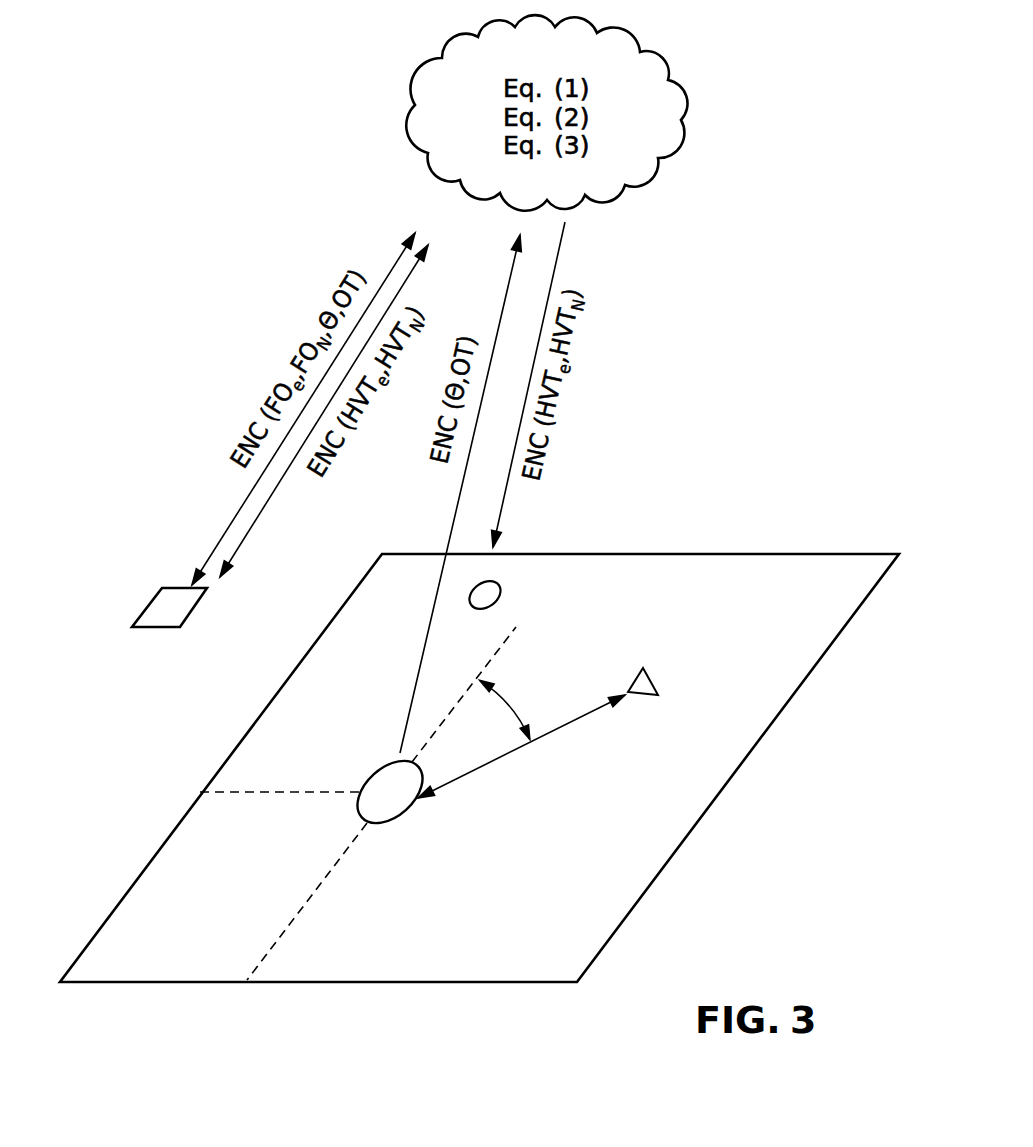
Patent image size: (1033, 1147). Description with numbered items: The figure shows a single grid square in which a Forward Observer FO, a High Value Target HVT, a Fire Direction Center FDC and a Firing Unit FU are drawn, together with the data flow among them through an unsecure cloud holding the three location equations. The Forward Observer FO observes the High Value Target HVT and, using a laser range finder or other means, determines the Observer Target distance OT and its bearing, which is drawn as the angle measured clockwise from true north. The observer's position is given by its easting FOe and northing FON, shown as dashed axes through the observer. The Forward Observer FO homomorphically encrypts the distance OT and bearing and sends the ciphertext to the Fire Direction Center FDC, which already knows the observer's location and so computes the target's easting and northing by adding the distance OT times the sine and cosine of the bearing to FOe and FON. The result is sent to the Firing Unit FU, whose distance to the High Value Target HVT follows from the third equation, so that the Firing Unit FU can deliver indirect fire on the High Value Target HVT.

The Fire Direction Center FDC is at (157, 627).
The Firing Unit FU is at (495, 582).
The High Value Target HVT is at (650, 674).
The Forward Observer FO is at (386, 824).
The Observer Target distance OT is at (500, 758).
The FO northing FON is at (200, 792).
The FO easting FOe is at (248, 985).